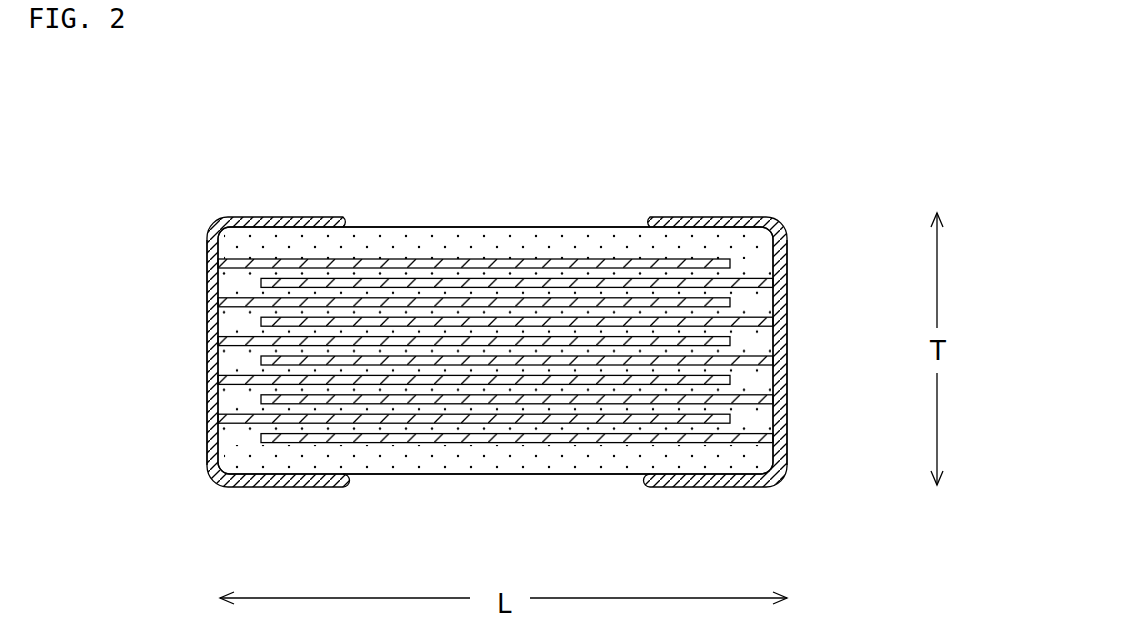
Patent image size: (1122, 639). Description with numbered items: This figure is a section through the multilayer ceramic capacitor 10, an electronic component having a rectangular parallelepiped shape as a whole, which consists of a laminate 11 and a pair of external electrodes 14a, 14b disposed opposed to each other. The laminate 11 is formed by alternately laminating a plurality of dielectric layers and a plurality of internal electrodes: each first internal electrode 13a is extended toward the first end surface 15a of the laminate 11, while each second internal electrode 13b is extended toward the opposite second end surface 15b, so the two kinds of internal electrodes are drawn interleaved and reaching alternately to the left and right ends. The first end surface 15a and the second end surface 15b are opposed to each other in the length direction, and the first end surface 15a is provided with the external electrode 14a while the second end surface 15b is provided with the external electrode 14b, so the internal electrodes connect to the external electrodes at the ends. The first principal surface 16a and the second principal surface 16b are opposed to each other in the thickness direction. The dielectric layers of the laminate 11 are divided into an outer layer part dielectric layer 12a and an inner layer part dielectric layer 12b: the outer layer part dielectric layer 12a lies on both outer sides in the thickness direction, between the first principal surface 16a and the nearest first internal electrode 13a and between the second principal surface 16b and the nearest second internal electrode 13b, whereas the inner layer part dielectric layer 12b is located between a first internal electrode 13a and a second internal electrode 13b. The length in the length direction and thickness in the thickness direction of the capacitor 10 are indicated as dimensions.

The multilayer ceramic capacitor 10 is at (693, 137).
The laminate 11 is at (620, 224).
The outer layer part dielectric layer 12a is at (463, 238).
The inner layer part dielectric layer 12b is at (492, 297).
The first internal electrode 13a is at (585, 297).
The second internal electrode 13b is at (578, 405).
The external electrode 14a is at (207, 365).
The external electrode 14b is at (787, 355).
The first end surface 15a is at (207, 283).
The second end surface 15b is at (787, 279).
The first principal surface 16a is at (389, 222).
The second principal surface 16b is at (438, 477).